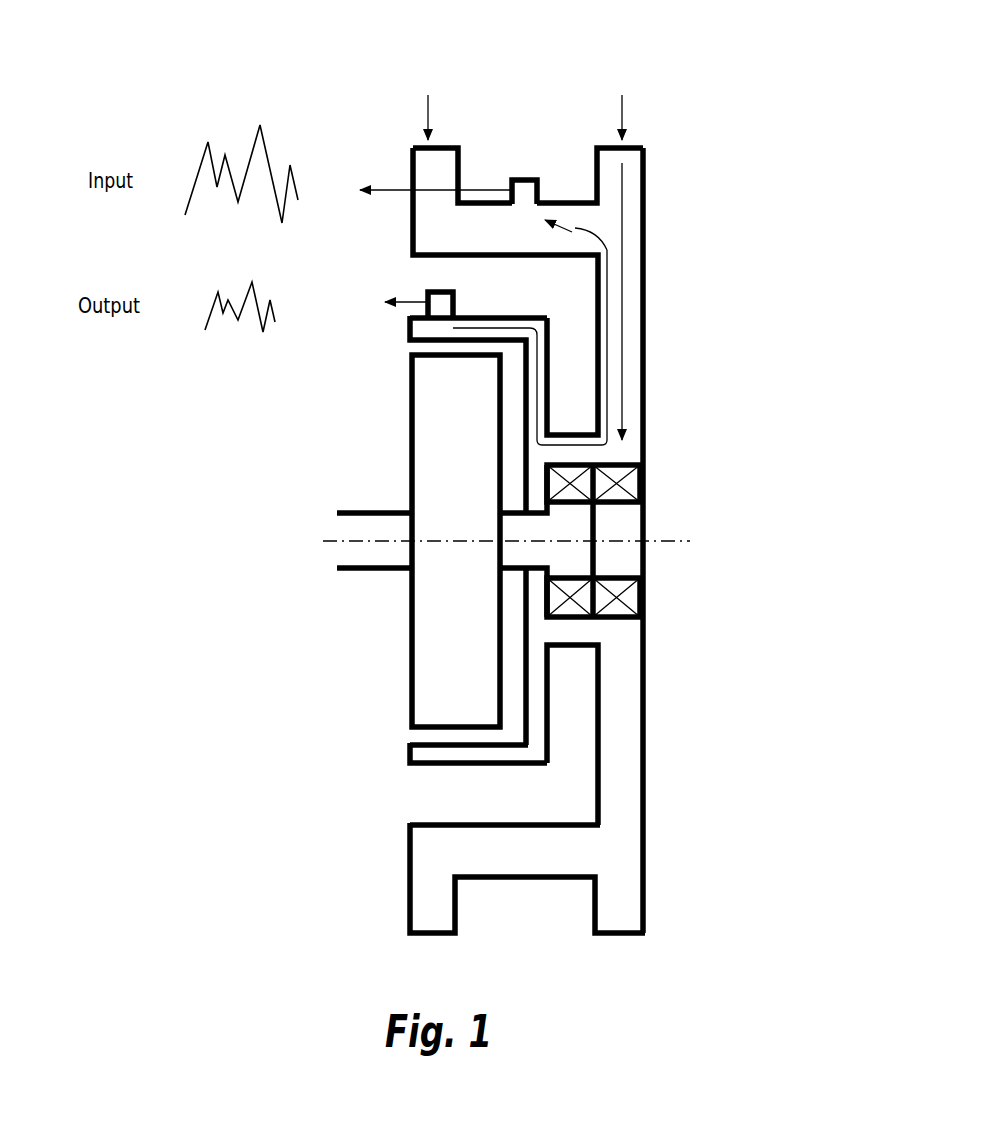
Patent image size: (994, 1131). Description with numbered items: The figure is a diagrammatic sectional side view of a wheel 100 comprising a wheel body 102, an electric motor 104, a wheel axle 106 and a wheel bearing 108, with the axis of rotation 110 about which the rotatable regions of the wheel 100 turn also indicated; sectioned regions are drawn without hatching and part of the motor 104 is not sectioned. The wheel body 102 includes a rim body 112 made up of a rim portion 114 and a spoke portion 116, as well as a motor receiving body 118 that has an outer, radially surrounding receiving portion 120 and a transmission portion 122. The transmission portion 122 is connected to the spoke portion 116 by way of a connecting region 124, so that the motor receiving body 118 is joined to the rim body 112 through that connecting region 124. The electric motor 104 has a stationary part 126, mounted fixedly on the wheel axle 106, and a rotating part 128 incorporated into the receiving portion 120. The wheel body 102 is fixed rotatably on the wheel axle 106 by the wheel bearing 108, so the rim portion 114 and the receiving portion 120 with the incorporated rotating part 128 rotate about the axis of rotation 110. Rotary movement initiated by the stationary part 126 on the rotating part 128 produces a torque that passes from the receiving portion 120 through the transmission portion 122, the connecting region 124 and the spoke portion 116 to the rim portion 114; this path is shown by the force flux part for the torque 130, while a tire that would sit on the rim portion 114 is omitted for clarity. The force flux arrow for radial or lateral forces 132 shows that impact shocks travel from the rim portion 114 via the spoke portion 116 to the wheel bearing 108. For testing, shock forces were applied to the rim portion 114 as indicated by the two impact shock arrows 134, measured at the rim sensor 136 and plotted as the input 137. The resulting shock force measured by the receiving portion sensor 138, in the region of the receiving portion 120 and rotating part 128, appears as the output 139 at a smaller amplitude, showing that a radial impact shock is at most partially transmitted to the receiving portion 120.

The wheel 100 is at (712, 98).
The wheel body 102 is at (680, 391).
The electric motor 104 is at (365, 428).
The wheel axle 106 is at (337, 568).
The wheel bearing 108 is at (645, 487).
The axis of rotation 110 is at (326, 541).
The rim body 112 is at (682, 215).
The rim portion 114 is at (490, 222).
The spoke portion 116 is at (620, 328).
The motor receiving body 118 is at (565, 773).
The receiving portion 120 is at (410, 765).
The transmission portion 122 is at (540, 723).
The connecting region 124 is at (645, 630).
The stationary part 126 is at (422, 392).
The rotating part 128 is at (410, 740).
The force flux part for the torque 130 is at (575, 228).
The force flux arrow for radial or lateral forces 132 is at (627, 174).
The impact shock arrows 134 is at (428, 108).
The rim sensor 136 is at (525, 178).
The input 137 is at (197, 163).
The receiving portion sensor 138 is at (425, 296).
The output 139 is at (212, 310).